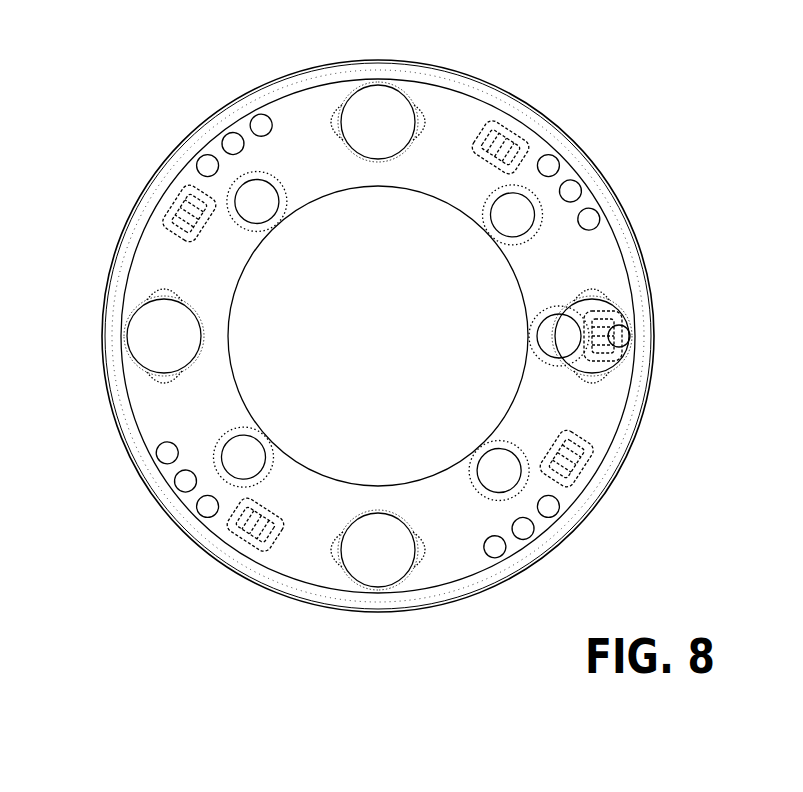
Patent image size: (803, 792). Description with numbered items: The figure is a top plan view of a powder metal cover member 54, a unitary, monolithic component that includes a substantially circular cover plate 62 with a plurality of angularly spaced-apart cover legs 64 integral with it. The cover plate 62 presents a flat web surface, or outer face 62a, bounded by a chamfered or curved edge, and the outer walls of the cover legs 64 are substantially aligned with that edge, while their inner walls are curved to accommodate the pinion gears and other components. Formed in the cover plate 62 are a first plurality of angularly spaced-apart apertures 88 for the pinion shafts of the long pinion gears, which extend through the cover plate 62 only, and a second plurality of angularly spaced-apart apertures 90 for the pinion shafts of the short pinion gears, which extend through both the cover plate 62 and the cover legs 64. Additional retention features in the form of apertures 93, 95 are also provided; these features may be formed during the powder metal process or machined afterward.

The cover member 54 is at (120, 122).
The cover plate 62 is at (452, 108).
The outer face 62a is at (153, 404).
The cover legs 64 is at (183, 573).
The first plurality of angularly spaced-apart apertures 88 is at (378, 83).
The second plurality of angularly spaced-apart apertures 90 is at (274, 215).
The apertures 93 is at (588, 462).
The apertures 95 is at (576, 184).